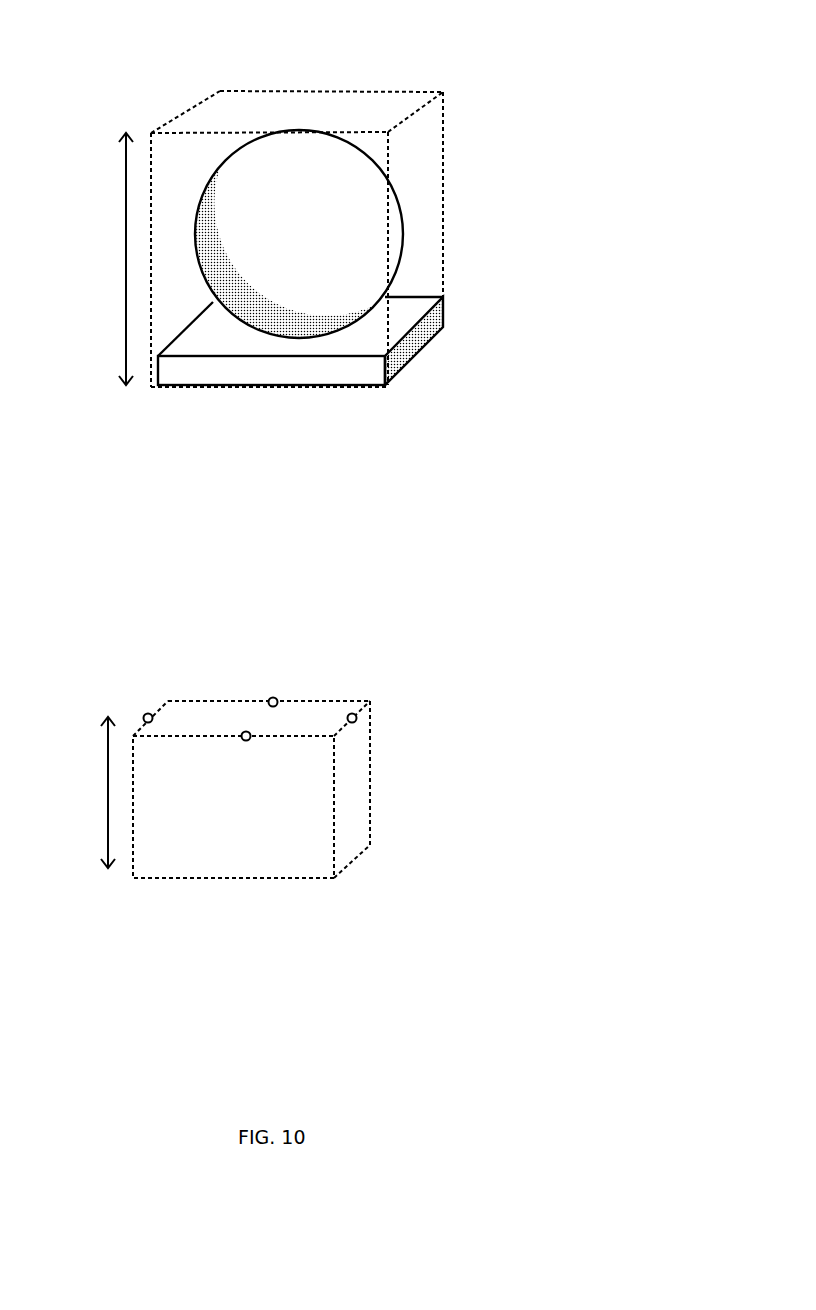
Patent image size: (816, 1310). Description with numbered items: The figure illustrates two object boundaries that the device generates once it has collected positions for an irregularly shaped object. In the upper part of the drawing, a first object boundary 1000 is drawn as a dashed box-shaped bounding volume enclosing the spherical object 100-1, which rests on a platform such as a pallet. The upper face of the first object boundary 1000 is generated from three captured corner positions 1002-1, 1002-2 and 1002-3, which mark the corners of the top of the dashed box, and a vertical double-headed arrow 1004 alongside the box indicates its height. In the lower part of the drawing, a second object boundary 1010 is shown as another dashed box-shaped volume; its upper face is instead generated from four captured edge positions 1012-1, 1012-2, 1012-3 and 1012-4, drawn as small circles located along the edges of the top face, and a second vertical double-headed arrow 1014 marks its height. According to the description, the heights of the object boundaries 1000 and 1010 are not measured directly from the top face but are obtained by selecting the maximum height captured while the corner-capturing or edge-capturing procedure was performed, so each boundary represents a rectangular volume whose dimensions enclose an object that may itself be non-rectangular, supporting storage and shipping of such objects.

The first object boundary 1000 is at (452, 188).
The corner position 1002-1 is at (151, 133).
The corner position 1002-2 is at (220, 91).
The corner position 1002-3 is at (443, 92).
The height dimension of bounding box 1004 is at (96, 259).
The spherical object 100-1 is at (329, 236).
The second object boundary 1010 is at (367, 795).
The edge position 1012-1 is at (144, 715).
The edge position 1012-2 is at (357, 718).
The edge position 1012-3 is at (246, 740).
The edge position 1012-4 is at (273, 698).
The height dimension of cuboid 1014 is at (81, 792).